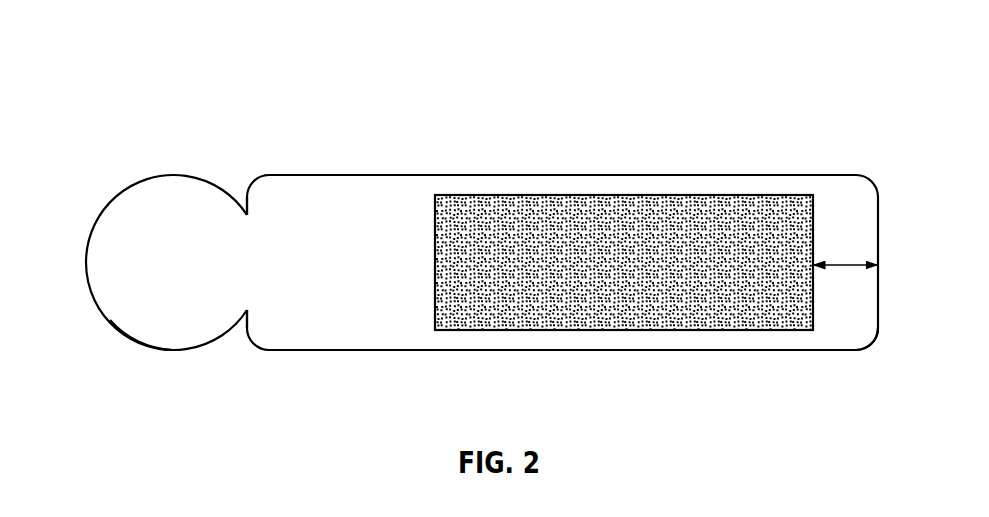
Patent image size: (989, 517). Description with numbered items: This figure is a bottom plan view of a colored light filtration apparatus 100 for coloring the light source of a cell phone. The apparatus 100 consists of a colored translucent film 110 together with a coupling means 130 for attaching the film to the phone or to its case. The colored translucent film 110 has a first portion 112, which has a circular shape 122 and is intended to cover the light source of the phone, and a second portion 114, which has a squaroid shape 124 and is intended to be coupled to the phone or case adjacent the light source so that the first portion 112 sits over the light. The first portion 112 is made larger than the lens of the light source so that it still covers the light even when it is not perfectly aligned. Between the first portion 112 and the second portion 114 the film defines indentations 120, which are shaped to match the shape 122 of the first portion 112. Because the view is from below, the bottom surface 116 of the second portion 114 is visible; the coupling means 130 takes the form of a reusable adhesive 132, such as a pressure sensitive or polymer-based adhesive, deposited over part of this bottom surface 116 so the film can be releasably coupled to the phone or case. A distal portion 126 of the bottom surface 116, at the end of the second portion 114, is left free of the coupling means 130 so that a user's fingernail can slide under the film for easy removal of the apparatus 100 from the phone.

The colored light filtration apparatus 100 is at (130, 78).
The colored translucent film 110 is at (858, 174).
The first portion 112 is at (165, 173).
The second portion 114 is at (622, 173).
The bottom surface 116 is at (838, 333).
The indentations 120 is at (238, 192).
The circular shape 122 is at (140, 343).
The squaroid shape 124 is at (380, 173).
The distal portion 126 is at (845, 263).
The coupling means 130 is at (648, 332).
The reusable adhesive 132 is at (636, 279).